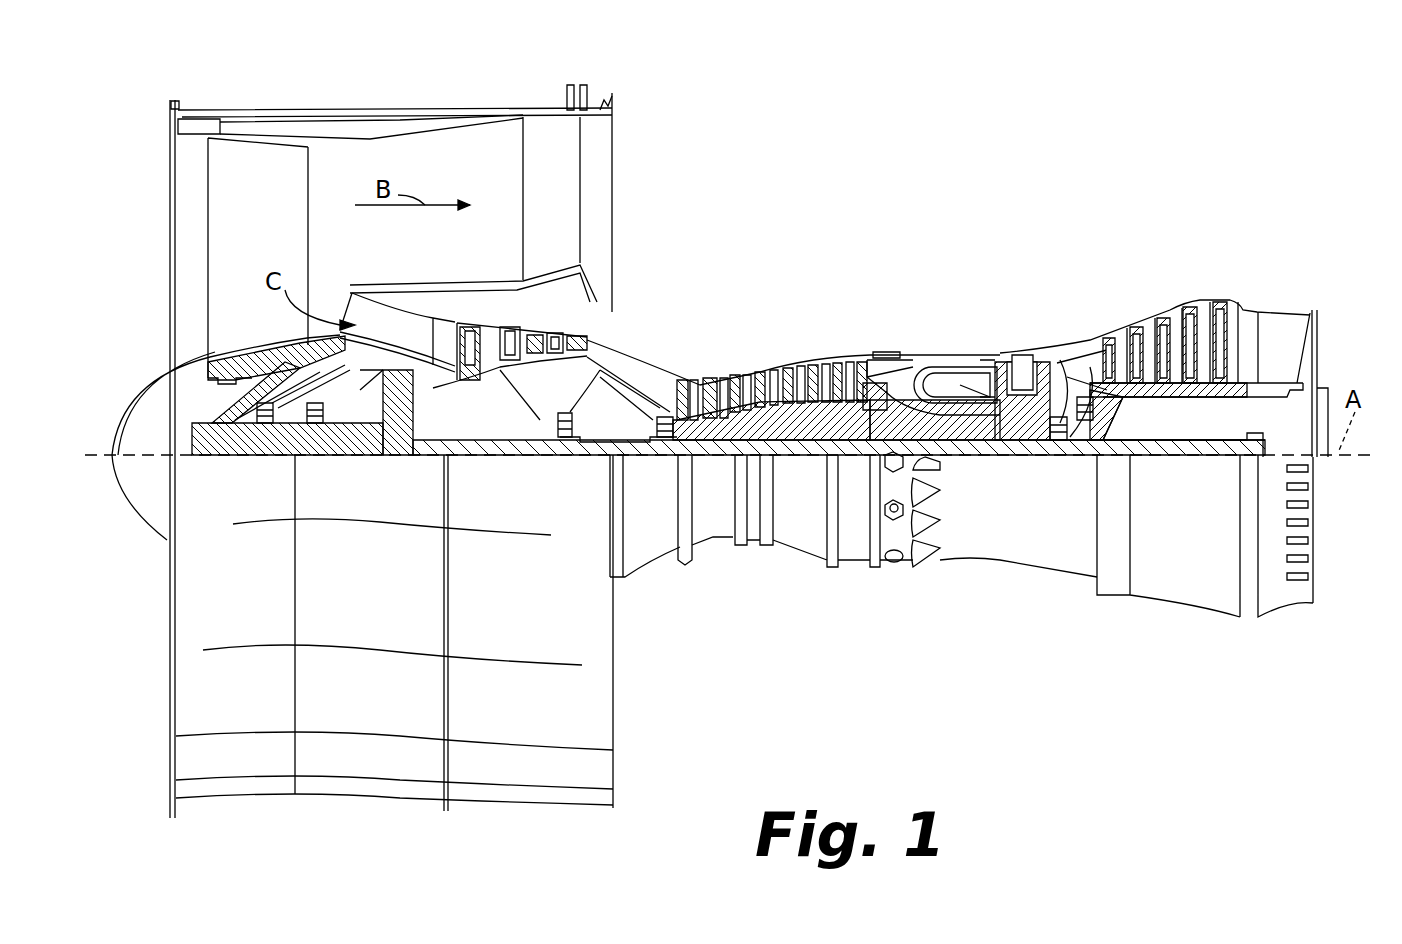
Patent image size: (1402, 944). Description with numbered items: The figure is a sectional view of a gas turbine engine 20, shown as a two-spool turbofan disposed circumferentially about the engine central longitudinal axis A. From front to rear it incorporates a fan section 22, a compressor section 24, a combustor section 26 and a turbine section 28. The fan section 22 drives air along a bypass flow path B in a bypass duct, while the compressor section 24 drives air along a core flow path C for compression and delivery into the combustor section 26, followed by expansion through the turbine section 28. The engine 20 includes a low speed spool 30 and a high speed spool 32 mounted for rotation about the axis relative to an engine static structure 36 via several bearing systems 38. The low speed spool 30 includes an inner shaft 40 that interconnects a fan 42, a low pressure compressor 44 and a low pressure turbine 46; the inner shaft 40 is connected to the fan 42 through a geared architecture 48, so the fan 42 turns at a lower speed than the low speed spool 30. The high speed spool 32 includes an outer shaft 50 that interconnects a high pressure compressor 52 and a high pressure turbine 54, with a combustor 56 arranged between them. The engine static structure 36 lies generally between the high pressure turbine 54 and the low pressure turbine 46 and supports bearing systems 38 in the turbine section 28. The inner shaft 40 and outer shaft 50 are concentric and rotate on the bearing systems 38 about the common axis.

The gas turbine engine 20 is at (1150, 145).
The fan section 22 is at (310, 110).
The compressor section 24 is at (788, 322).
The combustor section 26 is at (947, 322).
The turbine section 28 is at (1080, 304).
The low speed spool 30 is at (820, 457).
The high speed spool 32 is at (865, 395).
The engine static structure 36 is at (858, 562).
The bearing systems 38 is at (265, 425).
The inner shaft 40 is at (625, 455).
The fan 42 is at (282, 226).
The low pressure compressor 44 is at (540, 338).
The low pressure turbine 46 is at (1175, 325).
The geared architecture 48 is at (398, 430).
The outer shaft 50 is at (973, 430).
The high pressure compressor 52 is at (780, 420).
The high pressure turbine 54 is at (1023, 352).
The combustor 56 is at (950, 378).